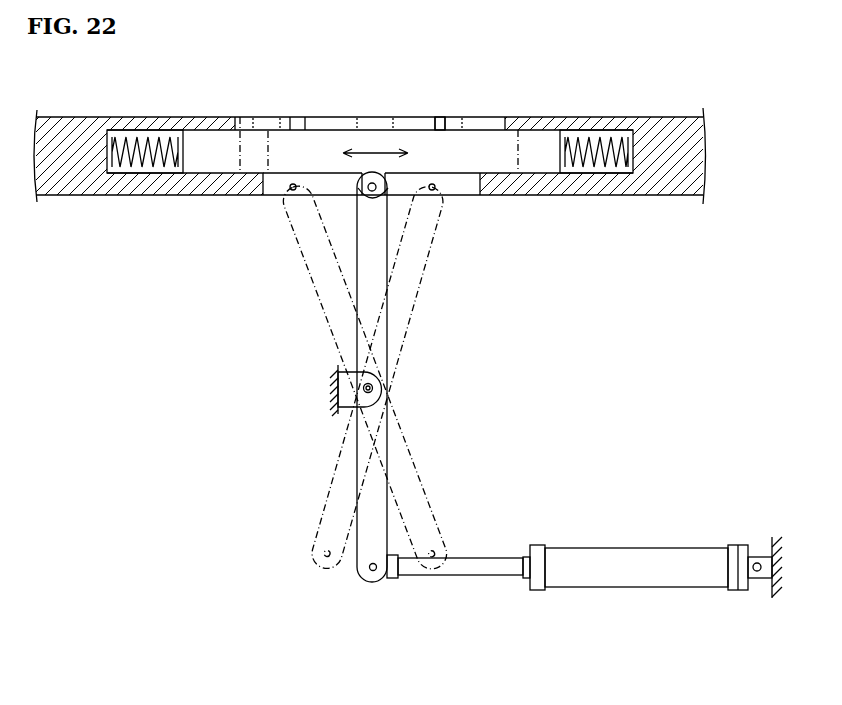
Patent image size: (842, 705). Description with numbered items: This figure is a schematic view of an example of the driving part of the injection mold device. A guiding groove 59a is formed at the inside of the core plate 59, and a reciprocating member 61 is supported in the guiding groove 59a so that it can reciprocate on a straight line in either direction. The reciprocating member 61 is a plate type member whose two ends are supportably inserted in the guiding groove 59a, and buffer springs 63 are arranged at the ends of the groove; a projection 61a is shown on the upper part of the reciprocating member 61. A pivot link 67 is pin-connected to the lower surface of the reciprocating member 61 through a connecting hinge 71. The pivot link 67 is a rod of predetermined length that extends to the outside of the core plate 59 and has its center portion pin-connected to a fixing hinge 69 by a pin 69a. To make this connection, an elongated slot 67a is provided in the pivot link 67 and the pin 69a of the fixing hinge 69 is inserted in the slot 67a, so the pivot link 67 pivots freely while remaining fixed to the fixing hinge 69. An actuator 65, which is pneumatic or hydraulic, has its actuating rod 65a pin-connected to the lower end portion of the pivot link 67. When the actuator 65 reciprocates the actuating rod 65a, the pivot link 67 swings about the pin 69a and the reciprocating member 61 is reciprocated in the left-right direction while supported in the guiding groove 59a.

The core plate 59 is at (684, 133).
The guiding groove 59a is at (166, 140).
The reciprocating member 61 is at (345, 121).
The slider projection 61a is at (440, 128).
The buffer spring 63 is at (130, 147).
The actuator 65 is at (635, 548).
The actuating rod 65a is at (489, 576).
The pivot link 67 is at (378, 262).
The elongated slot 67a is at (378, 396).
The fixing hinge 69 is at (344, 392).
The pin 69a is at (384, 386).
The connecting hinge 71 is at (362, 193).